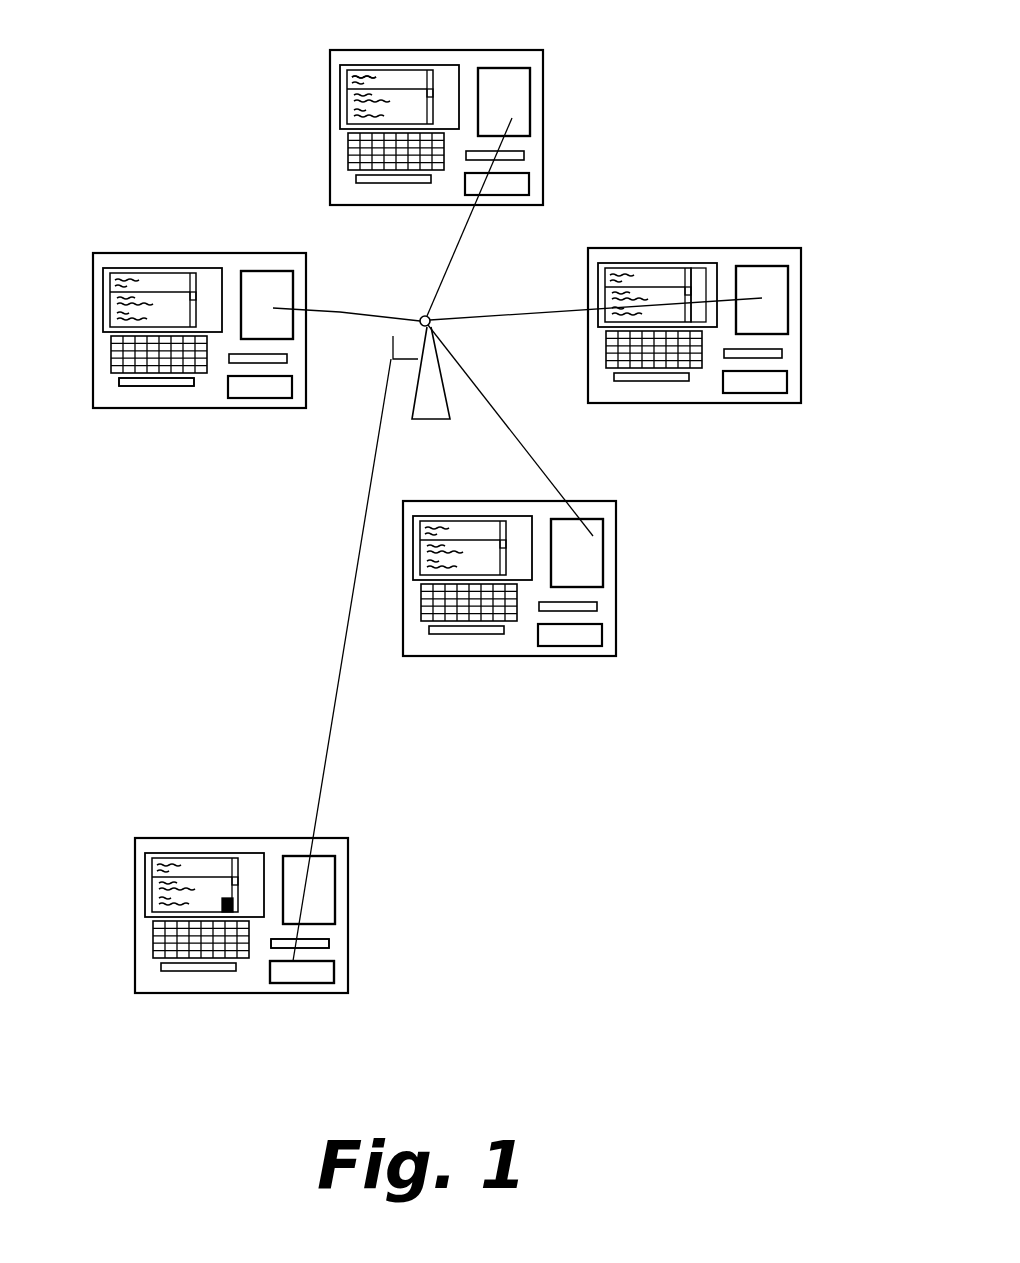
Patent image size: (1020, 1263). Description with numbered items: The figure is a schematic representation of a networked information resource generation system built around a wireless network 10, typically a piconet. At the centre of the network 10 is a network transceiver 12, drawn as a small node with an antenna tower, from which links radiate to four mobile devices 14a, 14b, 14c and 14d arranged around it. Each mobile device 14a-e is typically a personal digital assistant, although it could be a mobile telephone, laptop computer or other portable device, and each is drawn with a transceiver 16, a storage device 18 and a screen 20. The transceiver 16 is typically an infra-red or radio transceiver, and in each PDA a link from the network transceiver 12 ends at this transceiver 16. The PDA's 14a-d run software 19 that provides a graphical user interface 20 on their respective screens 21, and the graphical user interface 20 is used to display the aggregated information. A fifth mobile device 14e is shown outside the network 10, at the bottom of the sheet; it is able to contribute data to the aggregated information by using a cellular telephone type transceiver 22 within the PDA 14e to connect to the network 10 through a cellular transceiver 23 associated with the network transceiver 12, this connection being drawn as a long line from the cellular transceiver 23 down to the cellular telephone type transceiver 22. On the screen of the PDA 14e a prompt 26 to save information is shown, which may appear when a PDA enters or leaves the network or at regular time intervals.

The wireless network 10 is at (163, 501).
The transceiver 12 is at (420, 317).
The mobile device 14a is at (536, 108).
The mobile device 14b is at (792, 341).
The mobile device 14c is at (608, 590).
The mobile device 14d is at (97, 290).
The mobile device 14e is at (340, 928).
The transceiver 16 is at (517, 80).
The storage device 18 is at (135, 385).
The software 19 is at (324, 943).
The screen 20 is at (375, 86).
The screen 21 is at (702, 278).
The cellular telephone type transceiver 22 is at (297, 972).
The cellular transceiver 23 is at (393, 335).
The prompt 26 is at (221, 897).